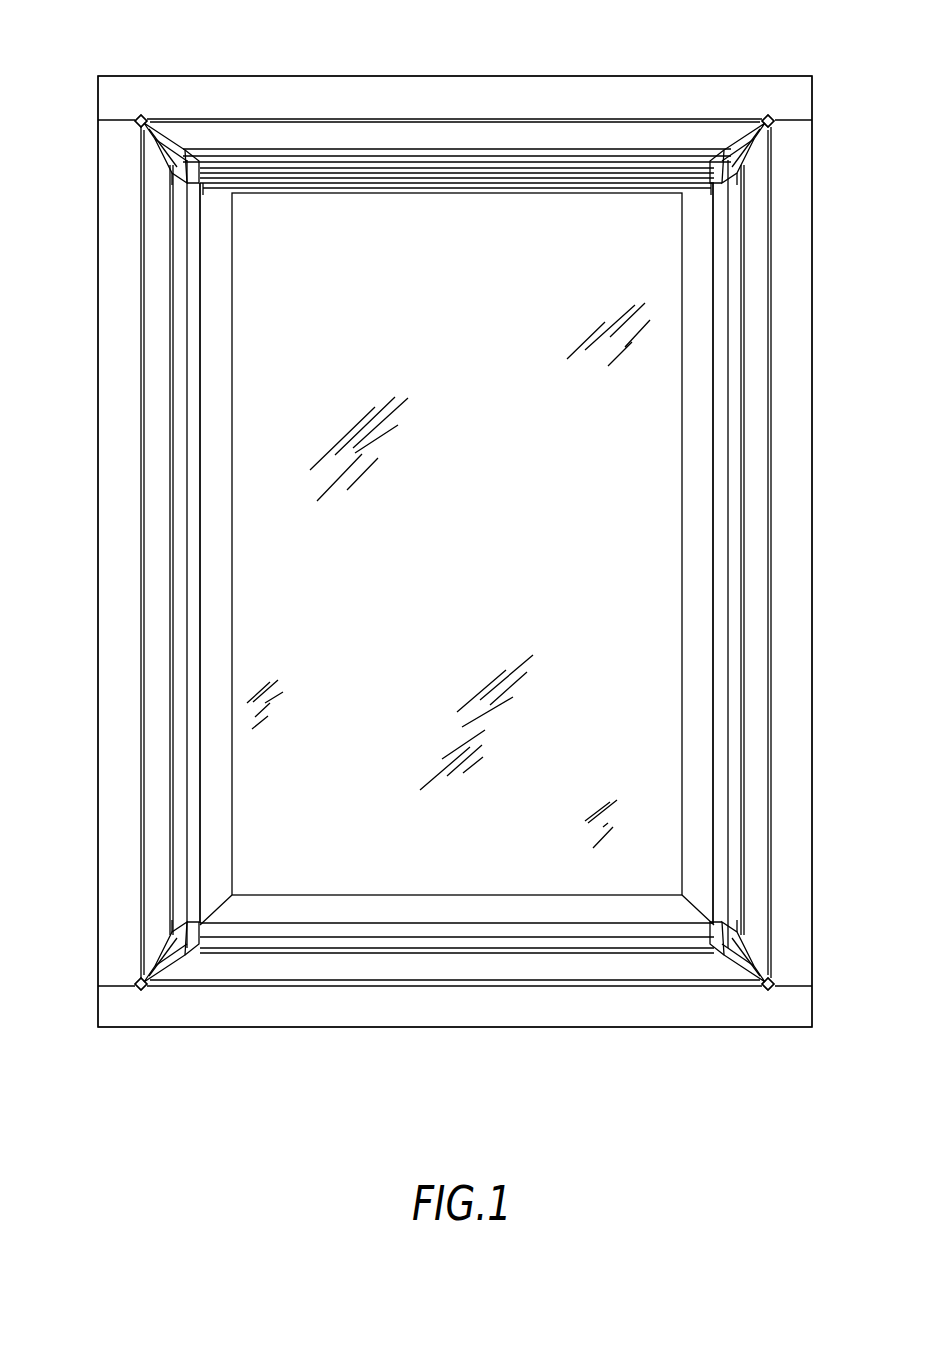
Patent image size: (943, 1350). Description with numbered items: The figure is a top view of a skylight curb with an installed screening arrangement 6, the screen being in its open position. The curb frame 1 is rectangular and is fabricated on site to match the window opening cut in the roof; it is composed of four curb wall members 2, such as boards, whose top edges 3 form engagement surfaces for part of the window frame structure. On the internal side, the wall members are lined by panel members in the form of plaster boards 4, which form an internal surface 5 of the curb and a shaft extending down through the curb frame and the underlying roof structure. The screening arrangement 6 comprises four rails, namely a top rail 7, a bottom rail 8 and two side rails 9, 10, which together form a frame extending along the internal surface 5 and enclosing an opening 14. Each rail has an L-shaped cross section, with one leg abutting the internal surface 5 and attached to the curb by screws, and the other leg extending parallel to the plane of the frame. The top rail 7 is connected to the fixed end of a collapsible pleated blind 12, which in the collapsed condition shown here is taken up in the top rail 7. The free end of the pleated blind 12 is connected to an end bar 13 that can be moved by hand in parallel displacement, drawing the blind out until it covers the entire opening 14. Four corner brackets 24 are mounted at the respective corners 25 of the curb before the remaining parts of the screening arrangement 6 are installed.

The curb frame 1 is at (580, 60).
The curb wall member 2 is at (398, 76).
The top edges 3 is at (118, 302).
The plaster boards 4 is at (140, 240).
The internal surface 5 is at (155, 612).
The screening arrangement 6 is at (312, 210).
The top rail 7 is at (510, 192).
The bottom rail 8 is at (445, 893).
The side rail 9 is at (222, 470).
The side rail 10 is at (690, 486).
The pleated blind 12 is at (657, 165).
The end bar 13 is at (418, 183).
The opening 14 is at (470, 522).
The corner bracket 24 is at (150, 150).
The corners 25 is at (152, 108).